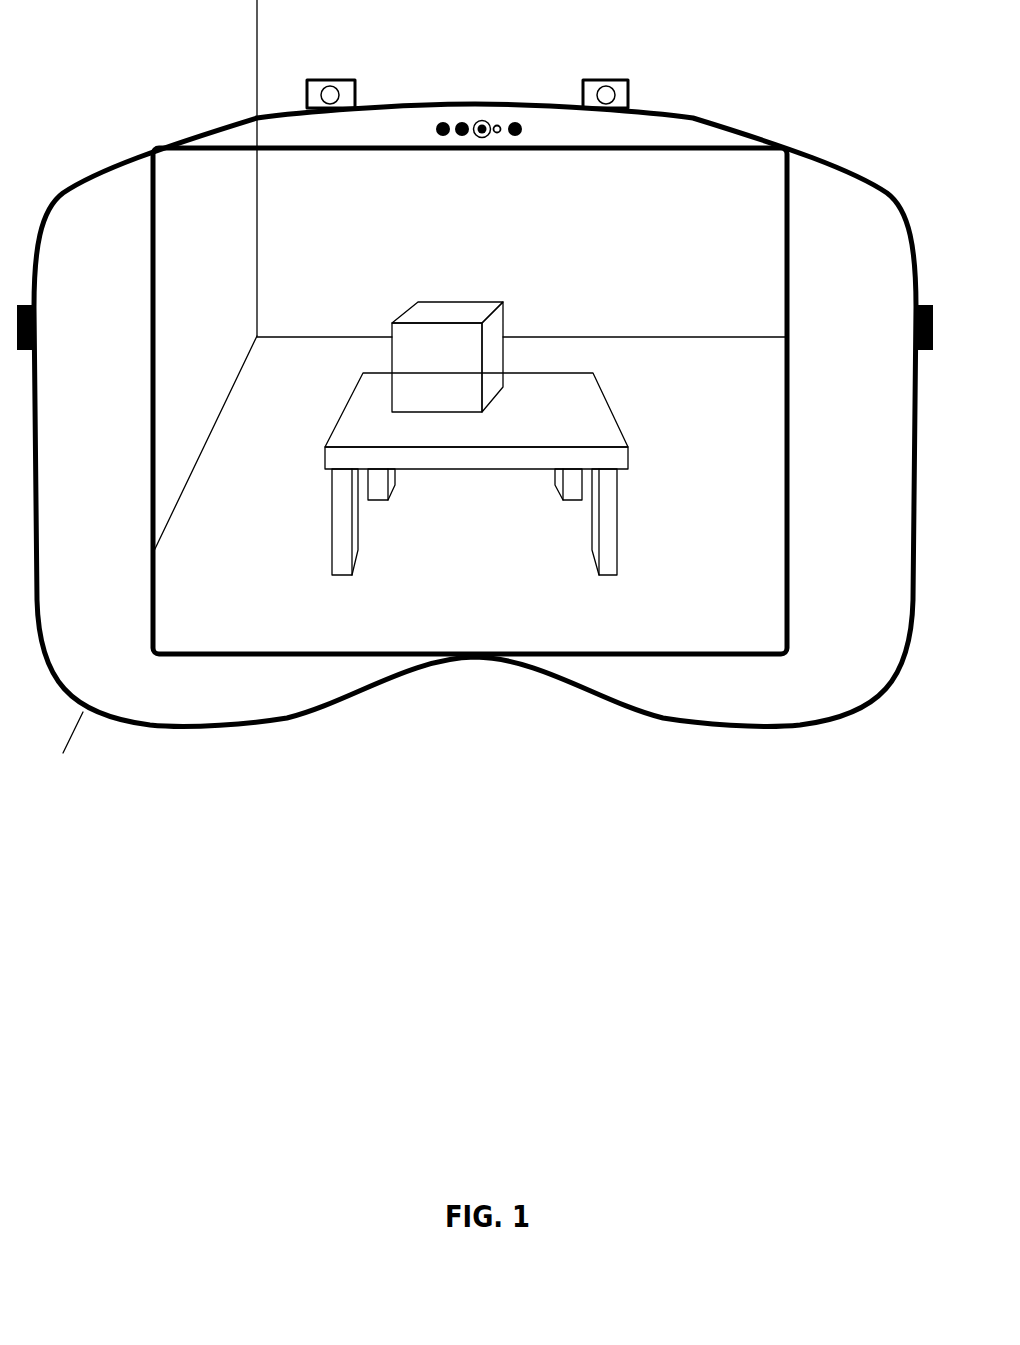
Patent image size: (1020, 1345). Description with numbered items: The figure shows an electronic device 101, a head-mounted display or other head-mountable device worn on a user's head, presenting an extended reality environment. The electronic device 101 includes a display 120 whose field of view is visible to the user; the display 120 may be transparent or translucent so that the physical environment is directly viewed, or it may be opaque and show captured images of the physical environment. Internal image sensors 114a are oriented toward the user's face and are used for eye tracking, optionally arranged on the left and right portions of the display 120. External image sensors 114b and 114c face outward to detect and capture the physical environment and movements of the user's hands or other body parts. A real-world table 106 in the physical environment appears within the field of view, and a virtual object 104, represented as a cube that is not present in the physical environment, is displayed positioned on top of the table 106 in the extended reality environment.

The electronic device 101 is at (199, 803).
The virtual object 104 is at (403, 314).
The table 106 is at (345, 406).
The internal image sensors 114a is at (542, 122).
The external image sensor 114b is at (355, 97).
The external image sensor 114c is at (628, 98).
The display 120 is at (715, 146).